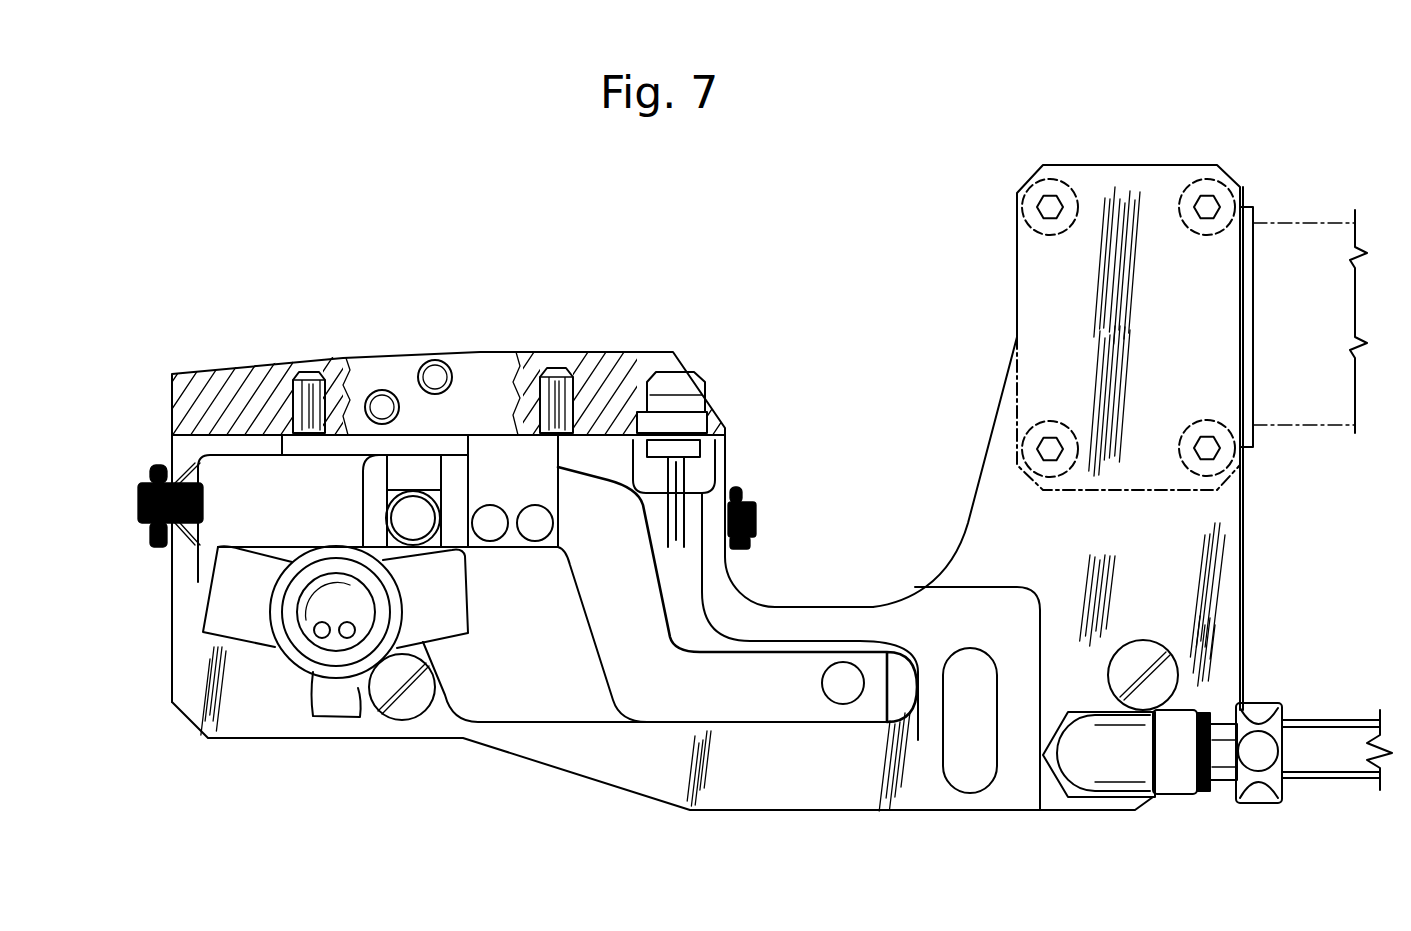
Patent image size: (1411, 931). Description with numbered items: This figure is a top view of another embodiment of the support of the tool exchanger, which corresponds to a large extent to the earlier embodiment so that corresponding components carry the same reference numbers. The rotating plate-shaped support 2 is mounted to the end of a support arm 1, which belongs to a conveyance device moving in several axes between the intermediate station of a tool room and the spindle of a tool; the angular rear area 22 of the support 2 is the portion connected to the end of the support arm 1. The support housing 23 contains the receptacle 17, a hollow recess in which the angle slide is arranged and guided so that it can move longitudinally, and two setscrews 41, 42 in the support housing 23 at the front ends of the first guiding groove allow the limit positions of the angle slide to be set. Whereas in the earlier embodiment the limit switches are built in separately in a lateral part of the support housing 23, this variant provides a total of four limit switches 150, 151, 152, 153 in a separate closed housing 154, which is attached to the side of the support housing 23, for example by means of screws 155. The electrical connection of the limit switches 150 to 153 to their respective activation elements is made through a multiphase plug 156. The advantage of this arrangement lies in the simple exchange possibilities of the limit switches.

The support arm 1 is at (1293, 238).
The support 2 is at (1147, 188).
The receptacle 17 is at (540, 695).
The angular rear area 22 is at (1182, 532).
The support housing 23 is at (188, 448).
The setscrew 41 is at (140, 483).
The setscrew 42 is at (753, 503).
The limit switch 150 is at (310, 372).
The limit switch 151 is at (385, 390).
The limit switch 152 is at (438, 360).
The limit switch 153 is at (563, 373).
The closed housing 154 is at (628, 370).
The screw 155 is at (237, 447).
The multiphase plug 156 is at (707, 377).